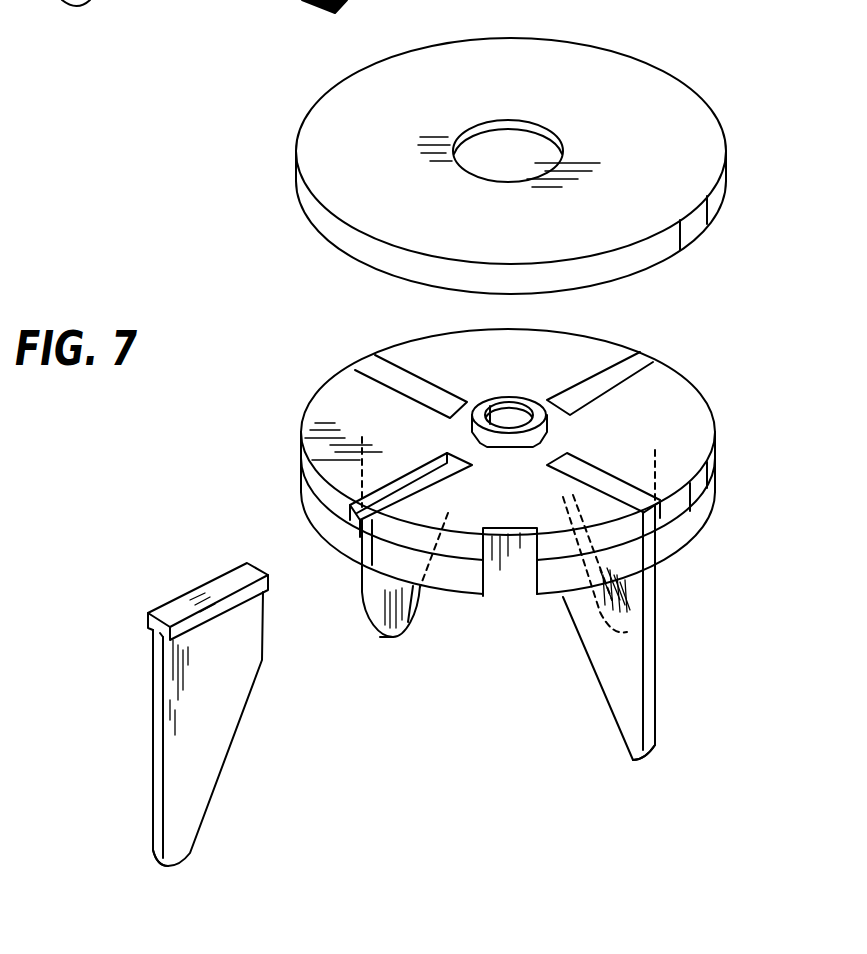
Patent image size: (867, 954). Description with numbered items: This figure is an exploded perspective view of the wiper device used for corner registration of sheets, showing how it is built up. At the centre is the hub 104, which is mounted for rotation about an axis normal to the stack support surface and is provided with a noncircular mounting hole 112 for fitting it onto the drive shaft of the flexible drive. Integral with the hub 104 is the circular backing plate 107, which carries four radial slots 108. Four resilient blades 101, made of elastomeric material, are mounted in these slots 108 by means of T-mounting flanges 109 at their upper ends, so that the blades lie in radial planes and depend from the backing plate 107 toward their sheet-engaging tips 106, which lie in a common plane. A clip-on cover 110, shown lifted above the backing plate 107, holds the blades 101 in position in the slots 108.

The resilient blades 101 is at (222, 732).
The hub 104 is at (557, 437).
The sheet-engaging tips 106 is at (90, 8).
The circular backing plate 107 is at (342, 383).
The radial slots 108 is at (360, 481).
The T-mounting flanges 109 is at (190, 592).
The clip-on cover 110 is at (608, 68).
The mounting hole 112 is at (520, 408).